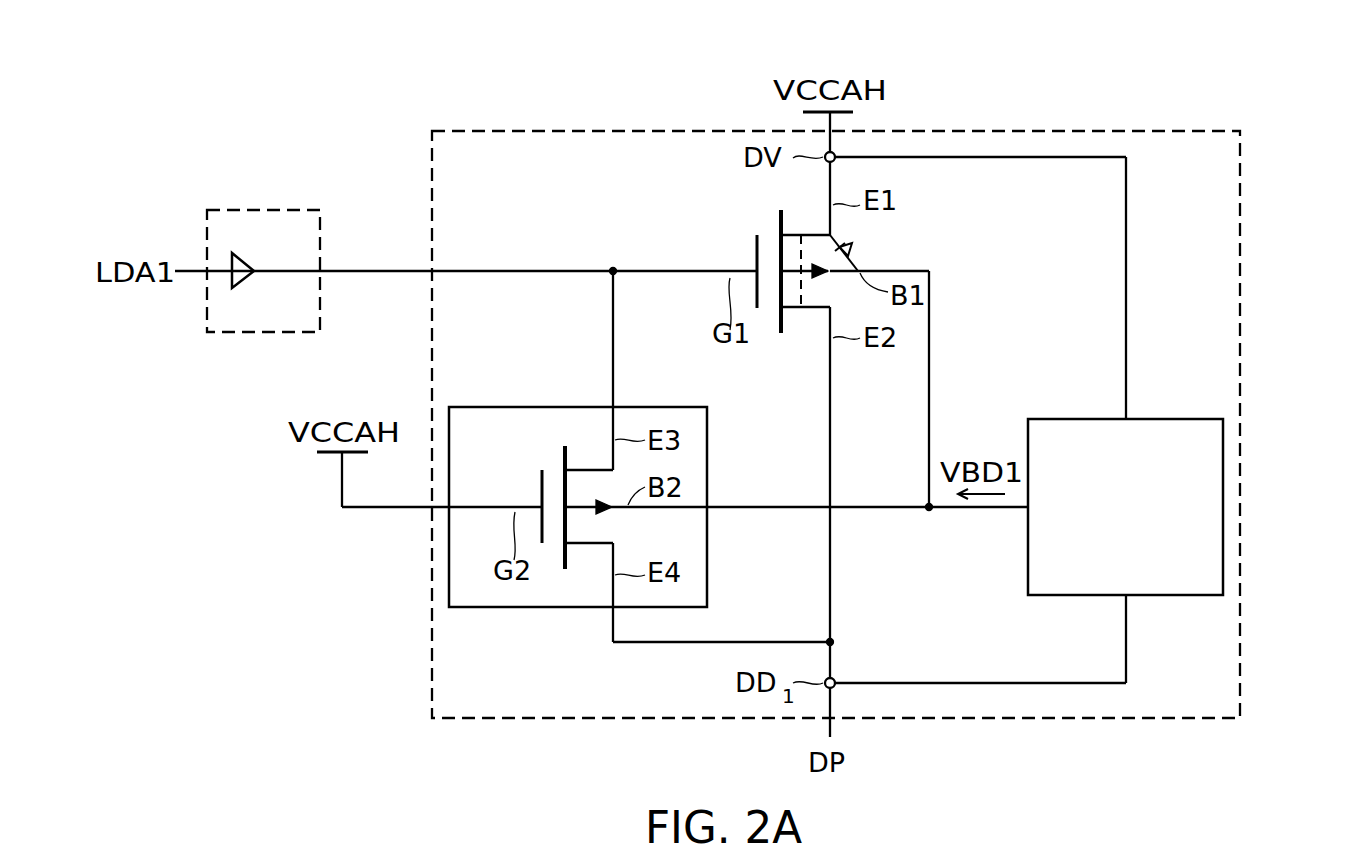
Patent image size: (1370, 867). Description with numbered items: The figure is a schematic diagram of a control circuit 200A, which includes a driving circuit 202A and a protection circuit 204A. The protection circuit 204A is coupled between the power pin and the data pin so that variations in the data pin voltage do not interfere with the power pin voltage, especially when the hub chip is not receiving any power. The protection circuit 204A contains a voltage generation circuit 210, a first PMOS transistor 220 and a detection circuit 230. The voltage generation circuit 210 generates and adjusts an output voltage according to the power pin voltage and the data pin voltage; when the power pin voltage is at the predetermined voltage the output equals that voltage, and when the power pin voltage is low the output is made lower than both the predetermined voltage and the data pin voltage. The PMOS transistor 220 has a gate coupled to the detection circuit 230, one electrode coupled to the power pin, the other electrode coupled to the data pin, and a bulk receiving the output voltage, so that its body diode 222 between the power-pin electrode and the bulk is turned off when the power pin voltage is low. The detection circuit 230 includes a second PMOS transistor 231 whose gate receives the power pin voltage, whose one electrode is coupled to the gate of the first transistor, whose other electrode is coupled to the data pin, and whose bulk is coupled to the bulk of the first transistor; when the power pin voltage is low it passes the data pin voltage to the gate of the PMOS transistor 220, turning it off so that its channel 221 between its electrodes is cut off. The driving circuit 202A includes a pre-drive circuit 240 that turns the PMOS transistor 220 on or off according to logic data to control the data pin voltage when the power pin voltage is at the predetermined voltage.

The control circuit 200A is at (1340, 82).
The driving circuit 202A is at (207, 210).
The protection circuit 204A is at (433, 131).
The voltage generation circuit 210 is at (1030, 419).
The PMOS transistor 220 is at (763, 287).
The channel 221 is at (790, 300).
The body diode 222 is at (848, 250).
The detection circuit 230 is at (450, 407).
The PMOS transistor 231 is at (553, 468).
The pre-drive circuit 240 is at (246, 260).